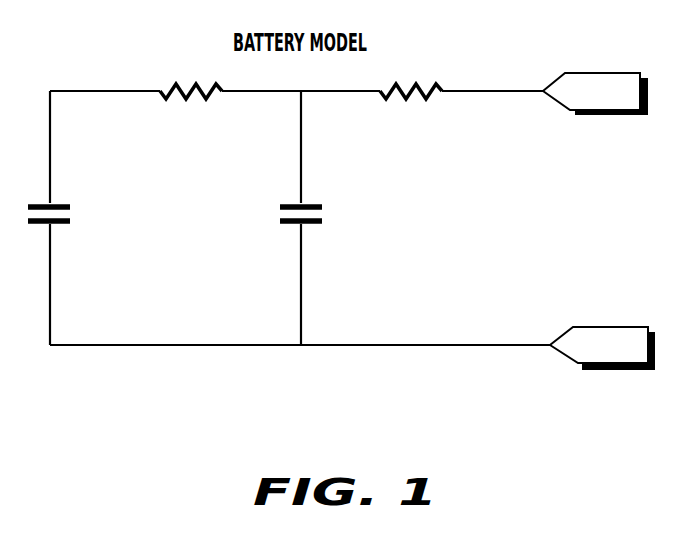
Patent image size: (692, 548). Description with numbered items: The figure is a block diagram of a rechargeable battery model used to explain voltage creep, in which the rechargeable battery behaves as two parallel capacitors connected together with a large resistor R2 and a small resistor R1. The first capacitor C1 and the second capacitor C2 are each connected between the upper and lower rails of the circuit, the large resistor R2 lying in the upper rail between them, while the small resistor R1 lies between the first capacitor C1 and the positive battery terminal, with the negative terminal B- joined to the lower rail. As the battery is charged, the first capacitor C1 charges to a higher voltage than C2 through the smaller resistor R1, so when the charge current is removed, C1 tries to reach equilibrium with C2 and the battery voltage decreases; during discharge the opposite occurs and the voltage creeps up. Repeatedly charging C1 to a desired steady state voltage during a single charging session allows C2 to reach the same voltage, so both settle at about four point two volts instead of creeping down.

The small resistor R1 is at (411, 112).
The large resistor R2 is at (191, 112).
The first capacitor C1 is at (315, 217).
The second capacitor C2 is at (67, 217).
The negative battery terminal B- is at (602, 366).